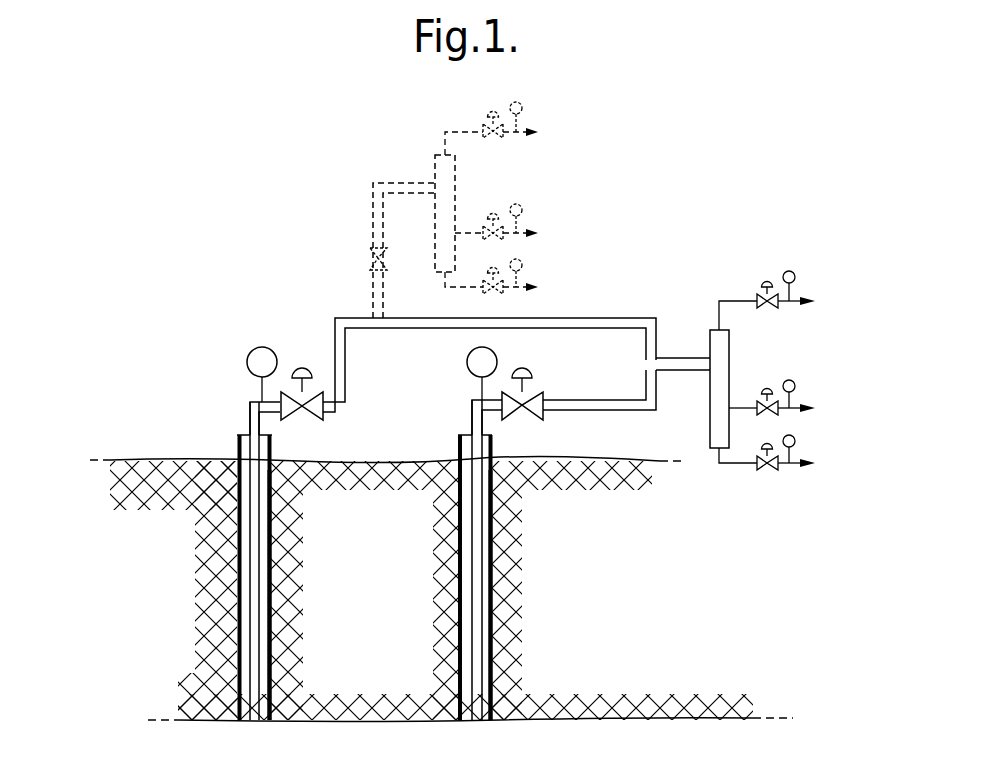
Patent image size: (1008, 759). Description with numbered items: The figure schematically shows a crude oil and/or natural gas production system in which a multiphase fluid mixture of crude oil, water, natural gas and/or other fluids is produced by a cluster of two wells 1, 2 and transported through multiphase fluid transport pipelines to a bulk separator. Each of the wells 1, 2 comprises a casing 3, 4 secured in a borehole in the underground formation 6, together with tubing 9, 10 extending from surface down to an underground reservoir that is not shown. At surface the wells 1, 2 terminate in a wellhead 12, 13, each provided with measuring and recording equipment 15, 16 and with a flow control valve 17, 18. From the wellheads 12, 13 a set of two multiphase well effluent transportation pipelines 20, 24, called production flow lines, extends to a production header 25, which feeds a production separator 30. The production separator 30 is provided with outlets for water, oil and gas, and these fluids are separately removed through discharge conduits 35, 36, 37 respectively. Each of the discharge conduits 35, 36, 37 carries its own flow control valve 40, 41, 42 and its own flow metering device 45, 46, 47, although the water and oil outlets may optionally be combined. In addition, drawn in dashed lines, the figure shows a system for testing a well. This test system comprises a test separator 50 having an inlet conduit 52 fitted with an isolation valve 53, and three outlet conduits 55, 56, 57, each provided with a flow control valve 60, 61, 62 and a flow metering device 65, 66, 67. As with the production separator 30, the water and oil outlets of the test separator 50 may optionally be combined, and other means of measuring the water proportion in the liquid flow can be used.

The well 1 is at (232, 649).
The well 2 is at (453, 652).
The casing 3 is at (272, 537).
The casing 4 is at (493, 553).
The underground formation 6 is at (376, 576).
The tubing 9 is at (253, 588).
The tubing 10 is at (476, 607).
The wellhead 12 is at (250, 418).
The wellhead 13 is at (472, 421).
The measuring and recording equipment 15 is at (251, 361).
The measuring and recording equipment 16 is at (469, 362).
The flow control valve 17 is at (309, 413).
The flow control valve 18 is at (538, 412).
The multiphase well effluent transportation pipeline 20 is at (606, 329).
The multiphase well effluent transportation pipeline 24 is at (624, 412).
The production header 25 is at (681, 358).
The production separator 30 is at (716, 422).
The discharge conduit 35 is at (735, 466).
The discharge conduit 36 is at (745, 406).
The discharge conduit 37 is at (736, 300).
The flow control valve 40 is at (772, 471).
The flow control valve 41 is at (760, 403).
The flow control valve 42 is at (759, 297).
The flow metering device 45 is at (795, 439).
The flow metering device 46 is at (795, 382).
The flow metering device 47 is at (794, 272).
The test separator 50 is at (435, 165).
The inlet conduit 52 is at (372, 193).
The isolation valve 53 is at (362, 258).
The outlet conduit 55 is at (446, 290).
The outlet conduit 56 is at (472, 231).
The outlet conduit 57 is at (446, 130).
The flow control valve 60 is at (505, 291).
The flow control valve 61 is at (496, 207).
The flow control valve 62 is at (487, 126).
The flow metering device 65 is at (523, 265).
The flow metering device 66 is at (523, 210).
The flow metering device 67 is at (523, 107).